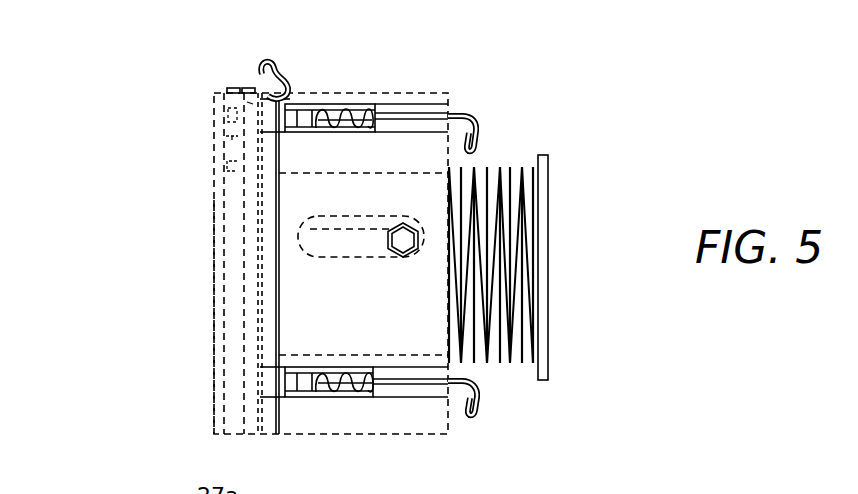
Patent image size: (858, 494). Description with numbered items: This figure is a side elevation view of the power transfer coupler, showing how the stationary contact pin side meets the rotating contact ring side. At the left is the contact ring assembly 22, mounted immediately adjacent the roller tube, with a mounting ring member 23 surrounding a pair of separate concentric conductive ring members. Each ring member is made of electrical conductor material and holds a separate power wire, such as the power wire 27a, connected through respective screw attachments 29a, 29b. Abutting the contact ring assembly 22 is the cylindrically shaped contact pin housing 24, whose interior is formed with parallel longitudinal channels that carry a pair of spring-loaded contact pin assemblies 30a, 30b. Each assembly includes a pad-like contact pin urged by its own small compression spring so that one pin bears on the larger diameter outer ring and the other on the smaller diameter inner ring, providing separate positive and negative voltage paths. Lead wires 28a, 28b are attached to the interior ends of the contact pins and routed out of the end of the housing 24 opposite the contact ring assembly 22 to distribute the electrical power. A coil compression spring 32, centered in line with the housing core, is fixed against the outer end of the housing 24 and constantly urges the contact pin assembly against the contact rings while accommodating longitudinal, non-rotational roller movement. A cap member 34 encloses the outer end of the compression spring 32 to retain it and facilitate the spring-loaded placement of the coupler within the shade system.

The contact ring assembly 22 is at (216, 447).
The mounting ring member 23 is at (206, 368).
The contact pin housing 24 is at (450, 438).
The power wire 27a is at (273, 60).
The lead wire 28a is at (476, 114).
The lead wire 28b is at (482, 393).
The screw attachment 29a is at (232, 88).
The screw attachment 29b is at (247, 86).
The spring-loaded contact pin assembly 30a is at (325, 103).
The spring-loaded contact pin assembly 30b is at (368, 398).
The coil compression spring 32 is at (485, 167).
The cap member 34 is at (548, 192).